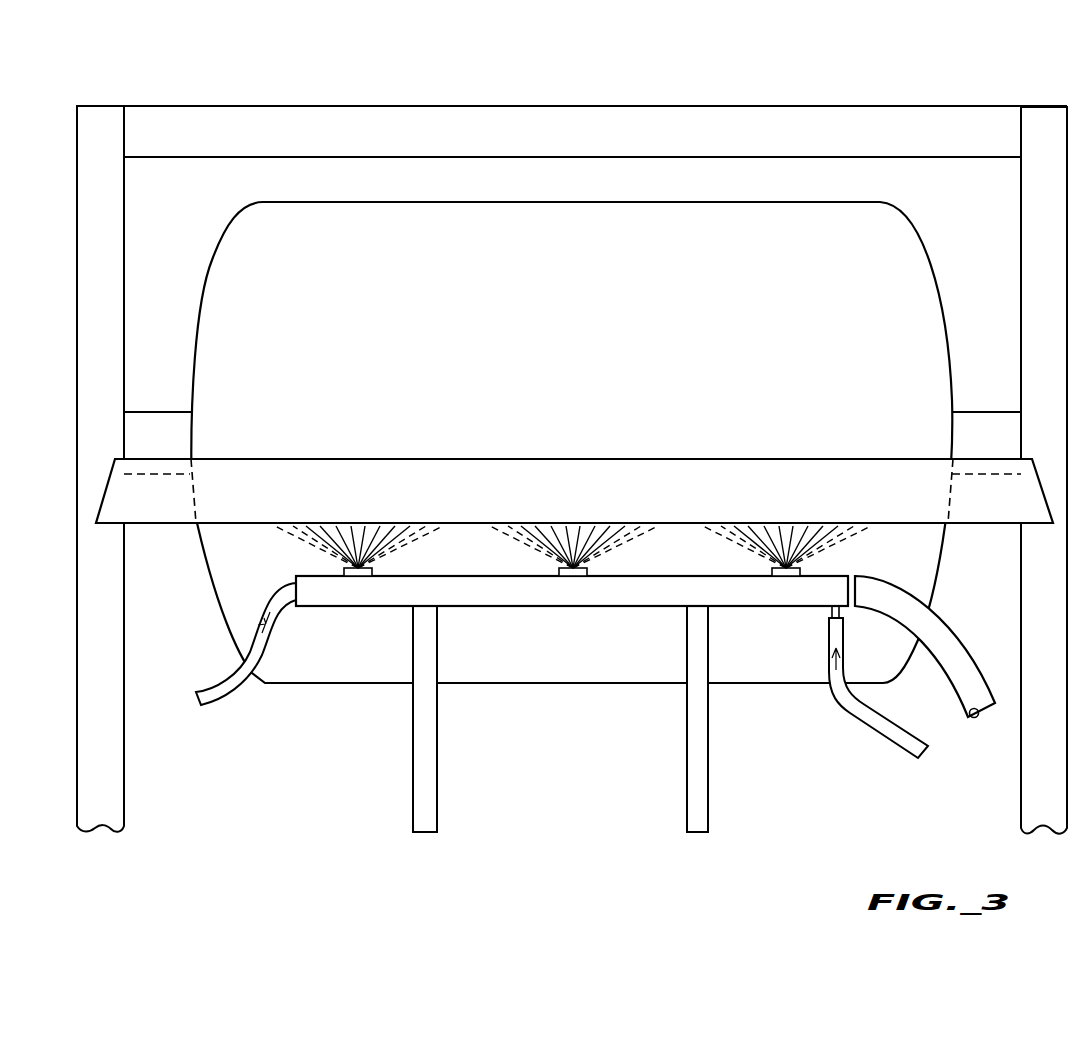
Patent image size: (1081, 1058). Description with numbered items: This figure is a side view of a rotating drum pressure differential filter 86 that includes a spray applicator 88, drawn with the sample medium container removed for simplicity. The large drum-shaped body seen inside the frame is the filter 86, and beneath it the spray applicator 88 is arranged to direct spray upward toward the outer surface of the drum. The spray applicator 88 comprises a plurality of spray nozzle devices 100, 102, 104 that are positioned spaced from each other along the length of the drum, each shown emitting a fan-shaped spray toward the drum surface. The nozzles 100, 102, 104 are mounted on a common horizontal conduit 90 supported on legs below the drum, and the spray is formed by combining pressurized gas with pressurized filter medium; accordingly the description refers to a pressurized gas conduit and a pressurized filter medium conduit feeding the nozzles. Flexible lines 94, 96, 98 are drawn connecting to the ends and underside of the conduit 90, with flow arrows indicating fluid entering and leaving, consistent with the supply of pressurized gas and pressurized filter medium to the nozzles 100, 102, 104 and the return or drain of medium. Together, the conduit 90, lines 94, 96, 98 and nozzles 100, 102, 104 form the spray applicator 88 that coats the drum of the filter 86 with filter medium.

The rotating drum pressure differential filter 86 is at (579, 366).
The spray applicator 88 is at (656, 600).
The manifold pipe 90 is at (455, 605).
The inlet hose 94 is at (955, 688).
The outlet hose 96 is at (857, 713).
The drain hose 98 is at (218, 690).
The spray nozzle 100 is at (788, 576).
The spray nozzle 102 is at (570, 576).
The spray nozzle 104 is at (366, 577).